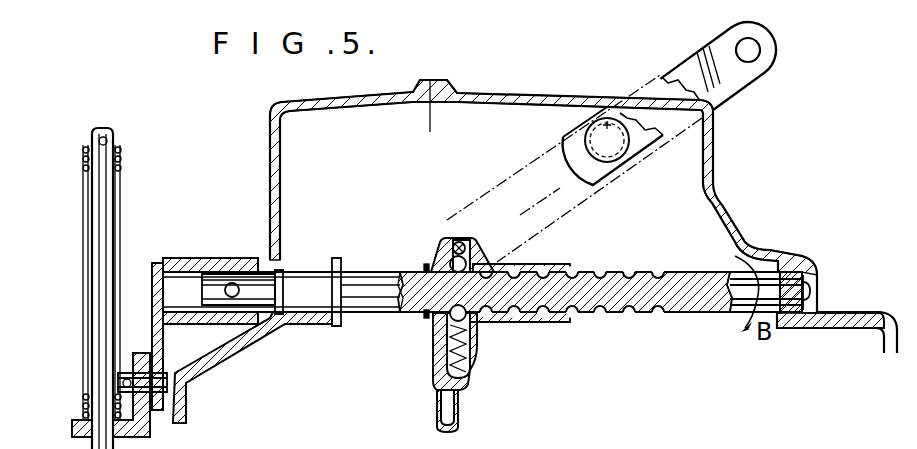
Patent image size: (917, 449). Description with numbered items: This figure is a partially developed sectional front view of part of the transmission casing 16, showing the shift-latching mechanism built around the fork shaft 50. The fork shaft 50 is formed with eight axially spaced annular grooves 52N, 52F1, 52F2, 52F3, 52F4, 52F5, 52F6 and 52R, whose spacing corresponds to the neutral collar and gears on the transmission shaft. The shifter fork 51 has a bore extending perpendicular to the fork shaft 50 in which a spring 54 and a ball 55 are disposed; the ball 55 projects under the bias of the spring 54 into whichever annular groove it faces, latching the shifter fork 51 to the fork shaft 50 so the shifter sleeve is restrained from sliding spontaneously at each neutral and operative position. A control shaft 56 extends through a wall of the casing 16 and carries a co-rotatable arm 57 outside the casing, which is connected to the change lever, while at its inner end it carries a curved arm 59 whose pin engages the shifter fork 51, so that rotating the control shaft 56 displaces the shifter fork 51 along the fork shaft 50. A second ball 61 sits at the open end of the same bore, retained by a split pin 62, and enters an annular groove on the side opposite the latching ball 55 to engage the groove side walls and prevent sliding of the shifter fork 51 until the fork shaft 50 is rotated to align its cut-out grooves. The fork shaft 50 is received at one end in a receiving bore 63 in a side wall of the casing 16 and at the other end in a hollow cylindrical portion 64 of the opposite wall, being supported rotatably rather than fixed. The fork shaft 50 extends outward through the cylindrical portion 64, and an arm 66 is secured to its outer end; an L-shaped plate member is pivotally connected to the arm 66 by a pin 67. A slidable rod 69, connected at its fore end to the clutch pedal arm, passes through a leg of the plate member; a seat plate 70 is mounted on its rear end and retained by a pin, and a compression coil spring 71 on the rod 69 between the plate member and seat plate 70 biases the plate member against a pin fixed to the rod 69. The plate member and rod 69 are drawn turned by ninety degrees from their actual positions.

The transmission casing 16 is at (738, 206).
The fork shaft 50 is at (352, 280).
The shifter fork 51 is at (478, 345).
The annular groove 52F1 is at (662, 318).
The annular groove 52F2 is at (600, 272).
The annular groove 52F3 is at (520, 318).
The annular groove 52F4 is at (542, 272).
The annular groove 52F5 is at (493, 320).
The annular groove 52F6 is at (425, 318).
The annular groove 52N is at (604, 320).
The annular groove 52R is at (640, 277).
The spring 54 is at (443, 385).
The ball 55 is at (448, 320).
The control shaft 56 is at (607, 125).
The co-rotatable arm 57 is at (740, 70).
The curved arm 59 is at (488, 215).
The second ball 61 is at (450, 264).
The split pin 62 is at (456, 243).
The receiving bore 63 is at (790, 303).
The hollow cylindrical portion 64 is at (316, 324).
The arm 66 is at (160, 336).
The pin 67 is at (150, 408).
The slidable rod 69 is at (95, 350).
The seat plate 70 is at (120, 145).
The compression coil spring 71 is at (83, 400).